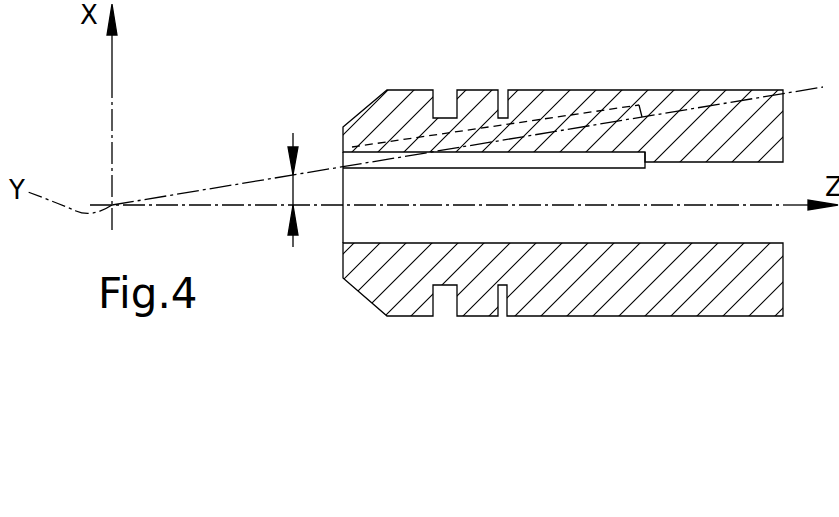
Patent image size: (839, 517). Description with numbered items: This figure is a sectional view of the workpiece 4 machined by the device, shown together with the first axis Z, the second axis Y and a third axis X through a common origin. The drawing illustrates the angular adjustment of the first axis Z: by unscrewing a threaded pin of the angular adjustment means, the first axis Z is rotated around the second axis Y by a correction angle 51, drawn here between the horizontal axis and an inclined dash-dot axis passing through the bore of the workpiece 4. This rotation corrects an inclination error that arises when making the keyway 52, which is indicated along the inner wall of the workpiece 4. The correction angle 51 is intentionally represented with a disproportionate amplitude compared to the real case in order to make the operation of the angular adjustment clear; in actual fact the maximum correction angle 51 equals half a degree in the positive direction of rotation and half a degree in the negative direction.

The workpiece 4 is at (670, 100).
The correction angle 51 is at (293, 190).
The keyway 52 is at (343, 152).